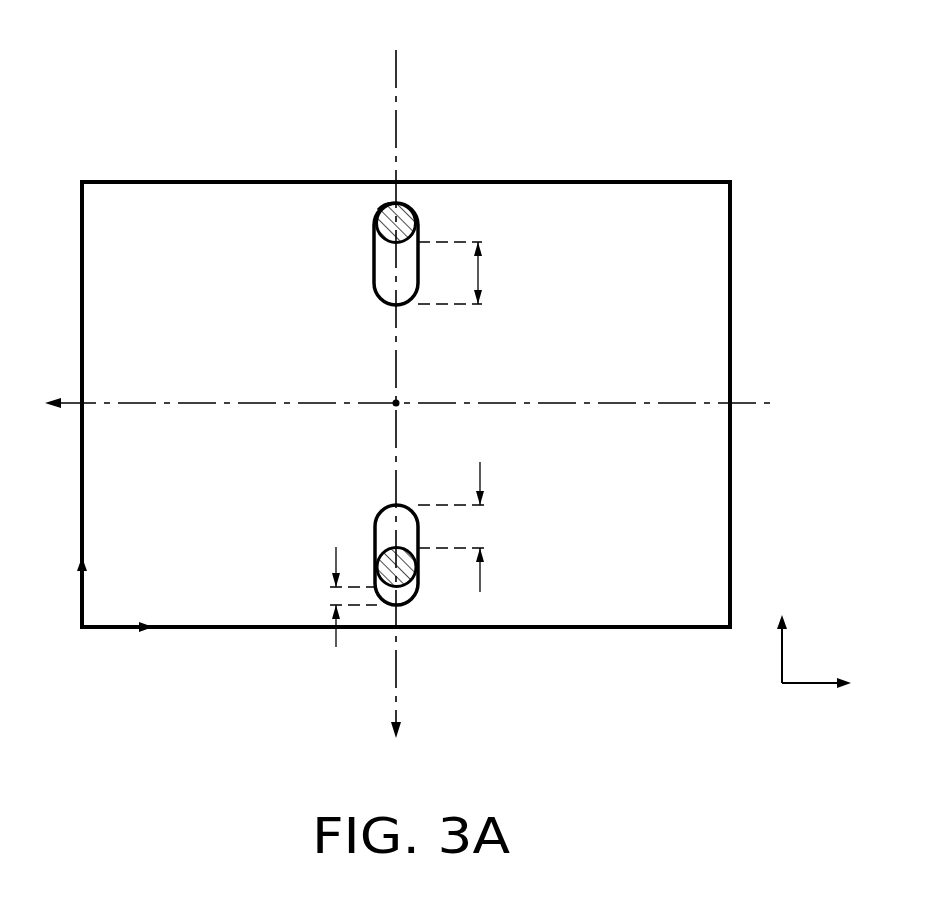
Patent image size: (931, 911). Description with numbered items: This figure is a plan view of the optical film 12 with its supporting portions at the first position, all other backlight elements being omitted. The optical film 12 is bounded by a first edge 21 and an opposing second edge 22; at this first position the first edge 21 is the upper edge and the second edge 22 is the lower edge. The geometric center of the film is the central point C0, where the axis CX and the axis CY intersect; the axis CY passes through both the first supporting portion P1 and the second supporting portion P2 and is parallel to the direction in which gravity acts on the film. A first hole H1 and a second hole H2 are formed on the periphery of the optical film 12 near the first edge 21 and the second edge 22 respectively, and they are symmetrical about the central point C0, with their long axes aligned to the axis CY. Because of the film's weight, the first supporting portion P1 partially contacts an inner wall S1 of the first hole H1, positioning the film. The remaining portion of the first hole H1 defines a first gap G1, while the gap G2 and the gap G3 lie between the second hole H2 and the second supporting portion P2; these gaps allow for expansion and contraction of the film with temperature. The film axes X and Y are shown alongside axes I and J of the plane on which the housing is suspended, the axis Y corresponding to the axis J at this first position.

The optical film 12 is at (95, 181).
The first edge 21 is at (561, 181).
The second edge 22 is at (562, 630).
The axis CY is at (393, 375).
The axis CX is at (433, 417).
The central point C0 is at (415, 424).
The first hole H1 is at (372, 256).
The first supporting portion P1 is at (418, 228).
The inner wall S1 is at (390, 205).
The first gap G1 is at (450, 273).
The second hole H2 is at (401, 607).
The second supporting portion P2 is at (418, 583).
The gap G2 is at (334, 597).
The gap G3 is at (451, 527).
The axis X is at (118, 648).
The axis Y is at (68, 589).
The axis I is at (822, 689).
The axis J is at (781, 632).